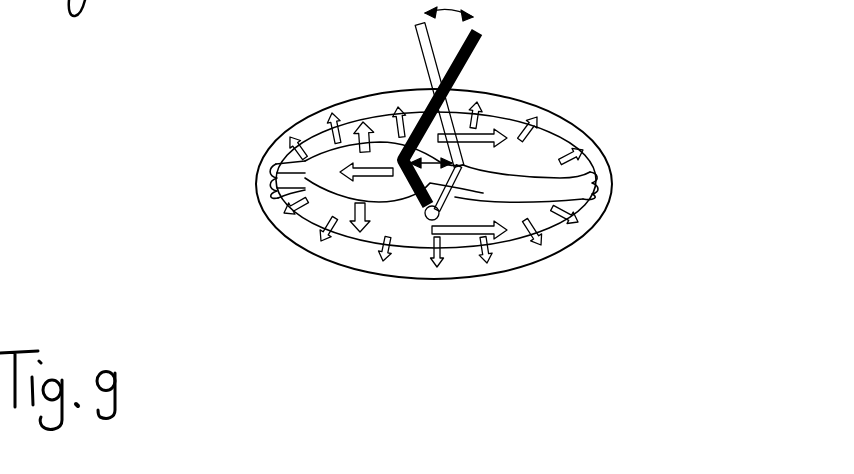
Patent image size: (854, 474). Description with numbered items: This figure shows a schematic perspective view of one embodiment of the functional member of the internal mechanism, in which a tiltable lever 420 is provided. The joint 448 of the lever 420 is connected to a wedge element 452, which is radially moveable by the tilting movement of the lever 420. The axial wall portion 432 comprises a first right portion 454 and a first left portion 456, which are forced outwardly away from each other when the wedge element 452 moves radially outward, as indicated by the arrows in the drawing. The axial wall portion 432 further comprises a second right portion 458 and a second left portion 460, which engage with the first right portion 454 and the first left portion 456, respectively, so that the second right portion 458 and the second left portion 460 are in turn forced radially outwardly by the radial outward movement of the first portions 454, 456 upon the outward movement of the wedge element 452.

The tiltable lever 420 is at (478, 70).
The axial wall portion 432 is at (503, 117).
The second right portion 458 is at (533, 163).
The wedge element 452 is at (295, 230).
The joint 448 is at (400, 175).
The first right portion 454 is at (332, 183).
The second left portion 460 is at (547, 210).
The first left portion 456 is at (403, 213).